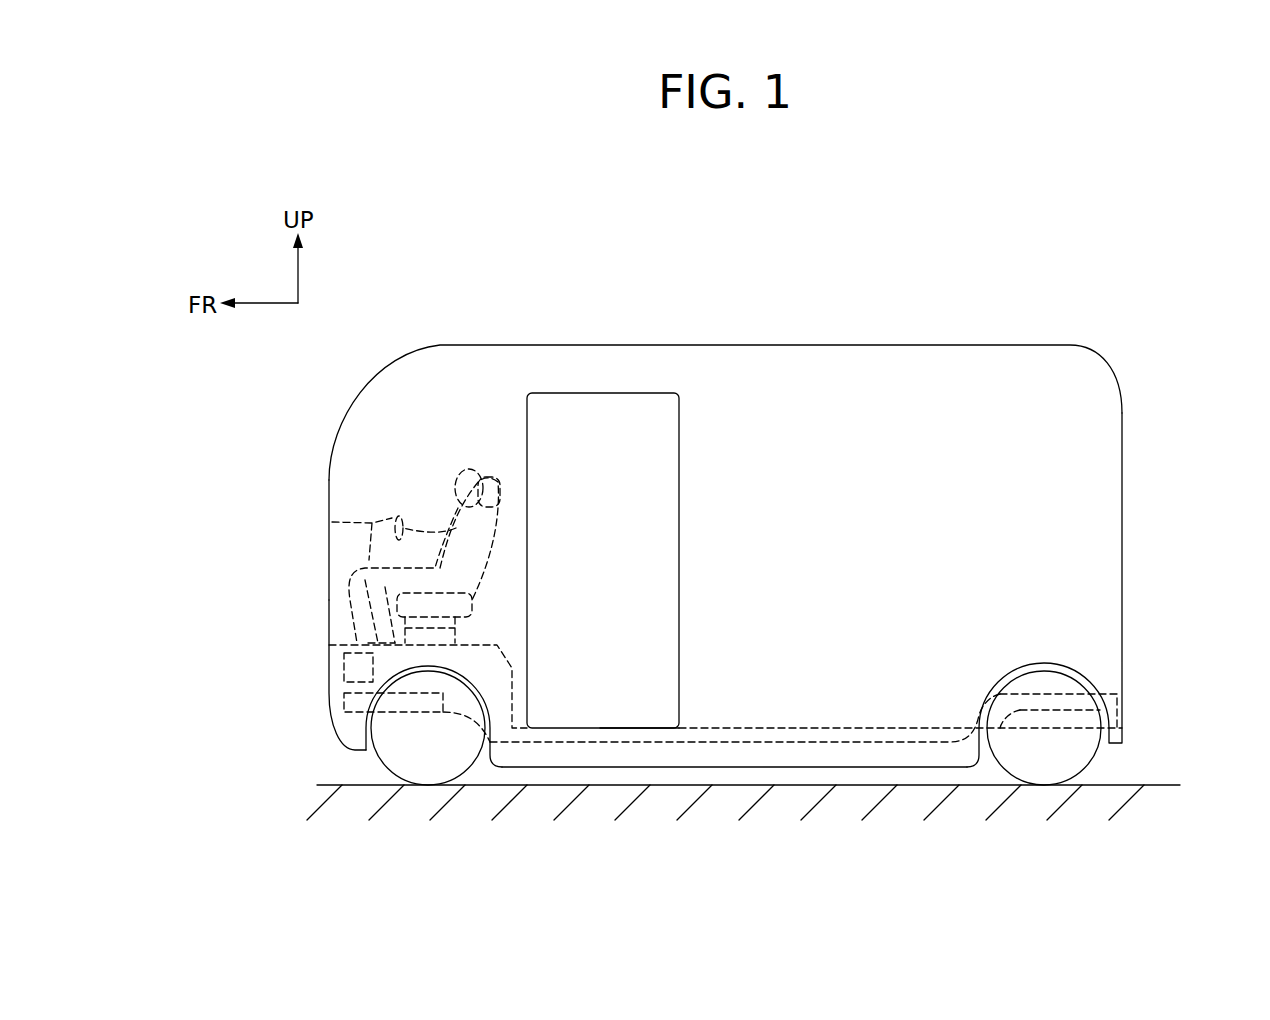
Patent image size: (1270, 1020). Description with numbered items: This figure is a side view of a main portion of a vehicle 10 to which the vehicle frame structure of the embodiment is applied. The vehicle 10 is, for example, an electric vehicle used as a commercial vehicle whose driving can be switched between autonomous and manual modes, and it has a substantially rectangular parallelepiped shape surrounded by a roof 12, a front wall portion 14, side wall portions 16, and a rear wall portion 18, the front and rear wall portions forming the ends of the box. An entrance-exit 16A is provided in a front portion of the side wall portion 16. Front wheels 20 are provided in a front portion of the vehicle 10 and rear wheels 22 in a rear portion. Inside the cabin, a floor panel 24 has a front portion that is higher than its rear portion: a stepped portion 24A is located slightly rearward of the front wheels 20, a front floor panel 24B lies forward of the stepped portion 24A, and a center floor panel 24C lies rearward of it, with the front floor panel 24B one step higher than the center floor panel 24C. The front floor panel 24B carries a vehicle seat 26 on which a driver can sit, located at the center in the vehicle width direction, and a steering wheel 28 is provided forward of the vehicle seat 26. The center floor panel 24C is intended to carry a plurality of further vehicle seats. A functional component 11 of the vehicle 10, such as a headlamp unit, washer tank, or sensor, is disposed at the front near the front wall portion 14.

The vehicle 10 is at (434, 264).
The functional component 11 is at (335, 670).
The roof 12 is at (836, 345).
The front wall portion 14 is at (330, 655).
The side wall portion 16 is at (719, 400).
The entrance-exit 16A is at (678, 703).
The rear wall portion 18 is at (1122, 532).
The front wheels 20 is at (380, 760).
The rear wheels 22 is at (1093, 757).
The floor panel 24 is at (800, 741).
The stepped portion 24A is at (514, 695).
The front floor panel 24B is at (340, 640).
The center floor panel 24C is at (738, 728).
The vehicle seat 26 is at (499, 470).
The steering wheel 28 is at (392, 510).